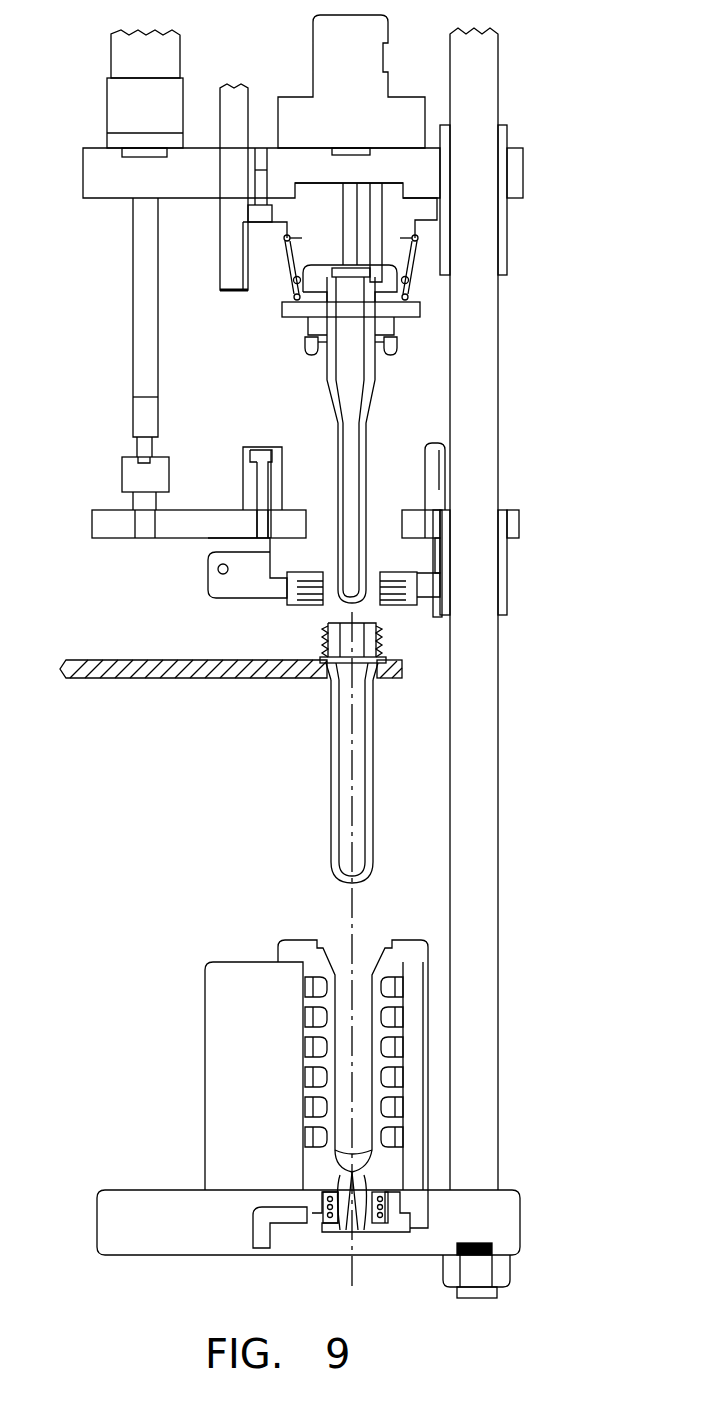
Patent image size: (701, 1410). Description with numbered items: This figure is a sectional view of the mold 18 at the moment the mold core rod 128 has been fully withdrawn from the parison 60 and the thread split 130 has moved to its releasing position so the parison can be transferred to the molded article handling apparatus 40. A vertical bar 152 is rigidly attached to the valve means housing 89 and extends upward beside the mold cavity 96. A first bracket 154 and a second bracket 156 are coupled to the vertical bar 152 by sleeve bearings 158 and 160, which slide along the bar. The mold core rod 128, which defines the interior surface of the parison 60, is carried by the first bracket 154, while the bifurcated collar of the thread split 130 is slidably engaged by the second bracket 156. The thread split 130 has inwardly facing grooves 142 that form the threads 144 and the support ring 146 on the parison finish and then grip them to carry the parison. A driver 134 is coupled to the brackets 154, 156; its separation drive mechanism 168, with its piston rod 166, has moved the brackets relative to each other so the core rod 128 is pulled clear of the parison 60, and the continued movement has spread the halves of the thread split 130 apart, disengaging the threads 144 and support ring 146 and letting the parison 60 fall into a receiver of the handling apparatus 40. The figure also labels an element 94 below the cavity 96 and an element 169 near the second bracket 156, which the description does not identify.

The mold 18 is at (205, 1045).
The molded article handling apparatus 40 is at (122, 678).
The parison 60 is at (293, 753).
The valve means housing 89 is at (522, 1212).
The bottom valve 94 is at (330, 1158).
The mold cavity 96 is at (367, 948).
The mold core rod 128 is at (367, 445).
The thread split 130 is at (313, 605).
The driver 134 is at (125, 285).
The inwardly facing grooves 142 is at (303, 580).
The threads 144 is at (322, 630).
The support ring 146 is at (322, 662).
The vertical bar 152 is at (500, 738).
The first bracket 154 is at (112, 200).
The second bracket 156 is at (122, 540).
The sleeve bearing 158 is at (508, 253).
The sleeve bearing 160 is at (508, 553).
The piston rod 166 is at (160, 302).
The separation drive mechanism 168 is at (122, 470).
The bracket 169 is at (218, 572).